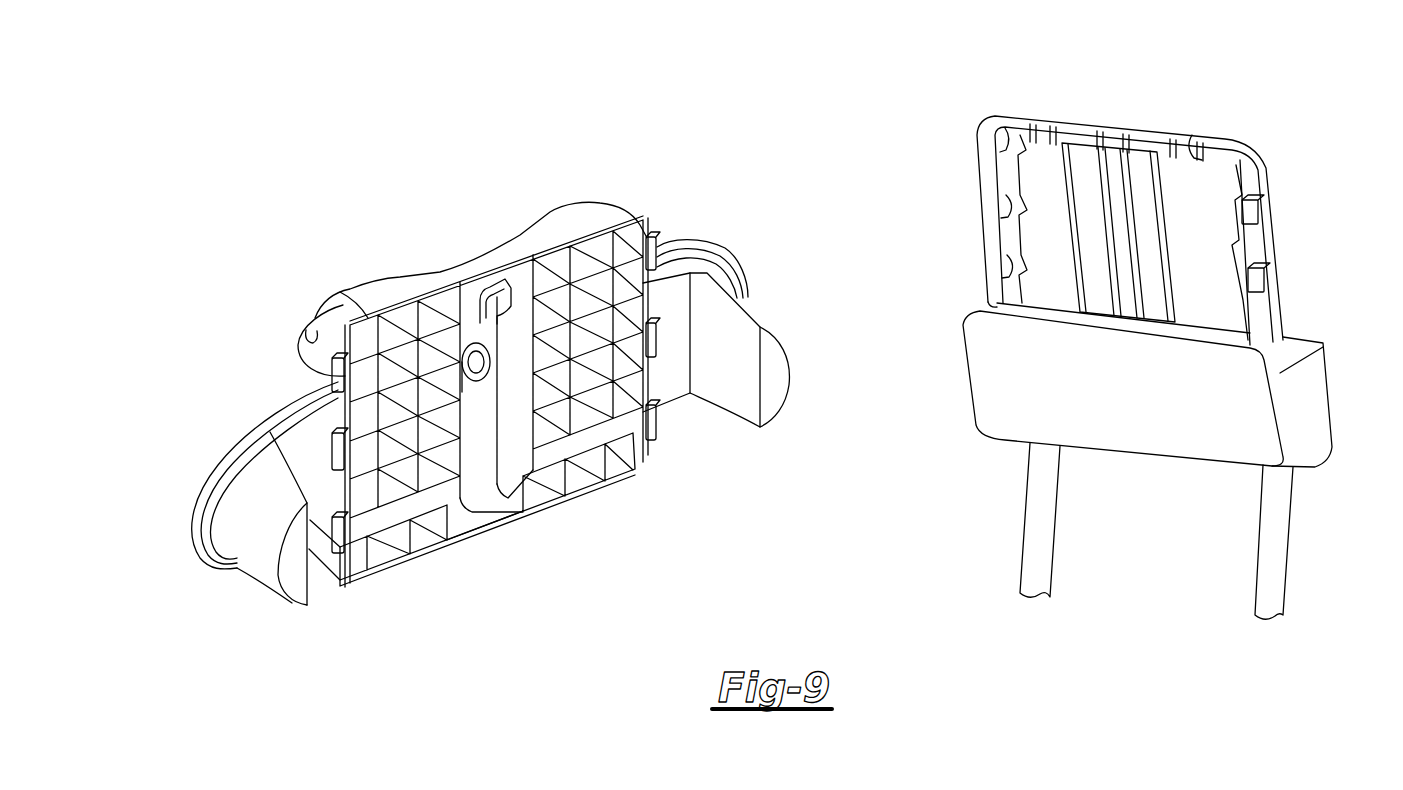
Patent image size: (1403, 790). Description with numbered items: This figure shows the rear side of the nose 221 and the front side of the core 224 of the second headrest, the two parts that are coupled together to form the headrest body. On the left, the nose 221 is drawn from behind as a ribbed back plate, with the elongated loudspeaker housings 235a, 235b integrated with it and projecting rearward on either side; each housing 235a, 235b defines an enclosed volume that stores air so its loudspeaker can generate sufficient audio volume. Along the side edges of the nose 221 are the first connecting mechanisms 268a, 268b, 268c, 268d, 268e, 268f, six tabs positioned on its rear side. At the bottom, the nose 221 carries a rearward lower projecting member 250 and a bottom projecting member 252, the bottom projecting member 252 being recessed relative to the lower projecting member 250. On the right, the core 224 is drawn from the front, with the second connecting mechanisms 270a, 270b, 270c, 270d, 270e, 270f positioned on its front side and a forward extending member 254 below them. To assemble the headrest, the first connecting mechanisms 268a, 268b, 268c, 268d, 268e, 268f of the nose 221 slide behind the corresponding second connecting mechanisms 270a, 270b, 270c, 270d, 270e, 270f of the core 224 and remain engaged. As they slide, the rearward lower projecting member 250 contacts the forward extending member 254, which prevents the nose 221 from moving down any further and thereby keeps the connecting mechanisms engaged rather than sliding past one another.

The nose 221 is at (567, 227).
The core 224 is at (1077, 127).
The loudspeaker housing 235a is at (763, 318).
The loudspeaker housing 235b is at (265, 538).
The rearward lower projecting member 250 is at (434, 520).
The bottom projecting member 252 is at (400, 563).
The forward extending member 254 is at (1200, 330).
The first connecting mechanism 268a is at (331, 380).
The first connecting mechanism 268b is at (328, 463).
The first connecting mechanism 268c is at (362, 552).
The first connecting mechanism 268d is at (655, 250).
The first connecting mechanism 268e is at (655, 339).
The first connecting mechanism 268f is at (658, 424).
The second connecting mechanism 270a is at (1207, 137).
The second connecting mechanism 270b is at (1208, 237).
The second connecting mechanism 270c is at (1216, 300).
The second connecting mechanism 270d is at (1007, 121).
The second connecting mechanism 270e is at (1006, 214).
The second connecting mechanism 270f is at (1013, 277).